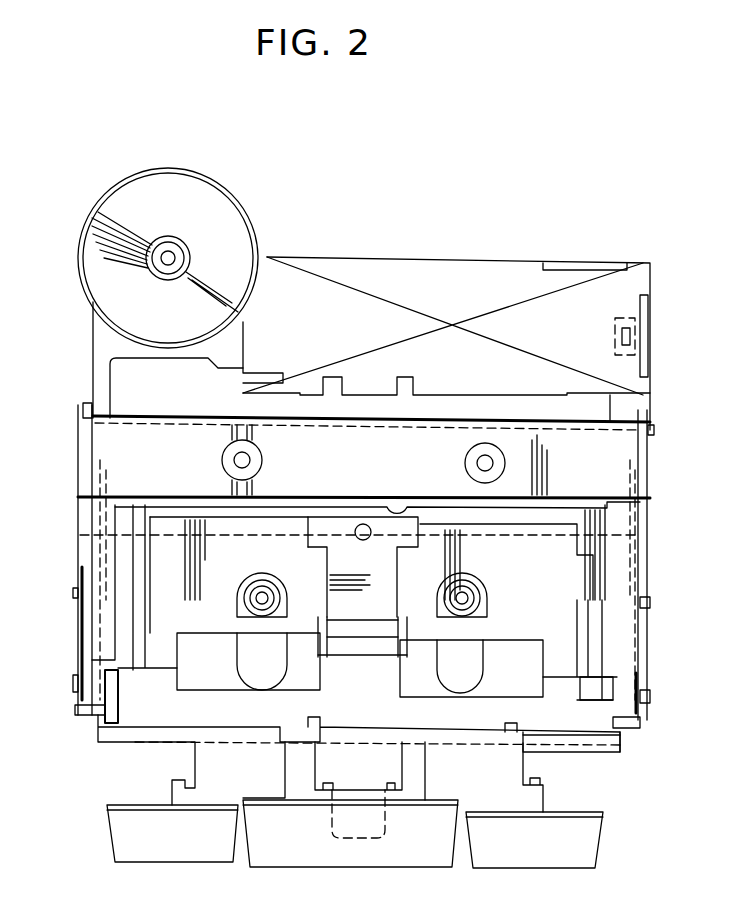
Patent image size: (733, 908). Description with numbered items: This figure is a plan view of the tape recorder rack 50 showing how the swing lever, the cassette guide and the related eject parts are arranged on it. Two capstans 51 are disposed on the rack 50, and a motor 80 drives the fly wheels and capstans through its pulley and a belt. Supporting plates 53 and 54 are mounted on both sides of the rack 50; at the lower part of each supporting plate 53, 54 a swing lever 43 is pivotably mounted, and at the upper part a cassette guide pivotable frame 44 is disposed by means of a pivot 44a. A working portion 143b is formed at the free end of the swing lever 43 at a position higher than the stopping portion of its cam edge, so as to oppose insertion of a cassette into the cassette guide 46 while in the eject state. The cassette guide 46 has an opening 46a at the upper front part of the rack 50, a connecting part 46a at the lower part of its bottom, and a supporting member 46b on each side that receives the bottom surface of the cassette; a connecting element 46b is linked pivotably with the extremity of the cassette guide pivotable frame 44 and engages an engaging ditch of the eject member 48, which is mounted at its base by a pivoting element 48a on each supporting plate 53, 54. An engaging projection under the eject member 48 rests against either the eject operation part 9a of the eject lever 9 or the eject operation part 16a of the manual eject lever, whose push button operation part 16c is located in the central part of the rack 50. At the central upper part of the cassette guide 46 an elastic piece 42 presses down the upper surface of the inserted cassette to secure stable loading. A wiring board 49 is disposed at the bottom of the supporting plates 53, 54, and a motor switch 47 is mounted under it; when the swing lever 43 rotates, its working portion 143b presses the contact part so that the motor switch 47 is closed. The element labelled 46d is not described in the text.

The motor 80 is at (215, 210).
The wiring board 49 is at (445, 263).
The motor switch 47 is at (628, 336).
The rack 50 is at (95, 348).
The cassette guide pivotable frame 44 is at (447, 416).
The pivot 44a is at (82, 410).
The supporting plate 54 is at (78, 455).
The supporting plate 53 is at (646, 470).
The swing lever 43 is at (102, 462).
The capstan 51 is at (246, 458).
The cassette guide 46 is at (290, 540).
The working portion 143b is at (368, 517).
The elastic piece 42 is at (378, 628).
The opening 46a is at (212, 638).
The supporting member 46b is at (75, 593).
The eject member 48 is at (82, 612).
The pivoting element 48a is at (73, 683).
The bracket block 46d is at (115, 690).
The eject operation part 16a is at (80, 718).
The eject operation part 9a is at (630, 730).
The eject lever 9 is at (575, 735).
The push button operation part 16c is at (383, 822).